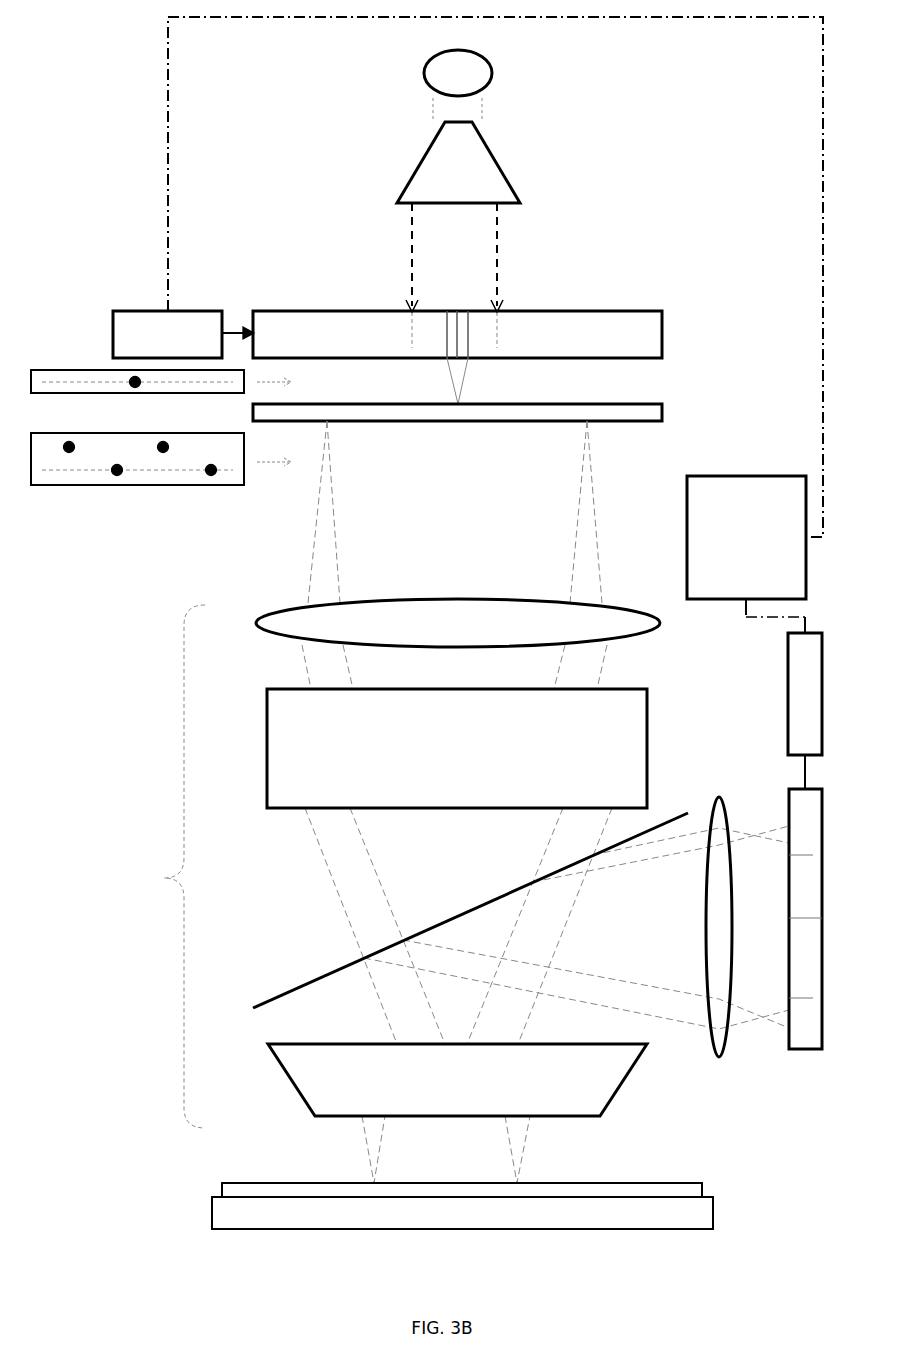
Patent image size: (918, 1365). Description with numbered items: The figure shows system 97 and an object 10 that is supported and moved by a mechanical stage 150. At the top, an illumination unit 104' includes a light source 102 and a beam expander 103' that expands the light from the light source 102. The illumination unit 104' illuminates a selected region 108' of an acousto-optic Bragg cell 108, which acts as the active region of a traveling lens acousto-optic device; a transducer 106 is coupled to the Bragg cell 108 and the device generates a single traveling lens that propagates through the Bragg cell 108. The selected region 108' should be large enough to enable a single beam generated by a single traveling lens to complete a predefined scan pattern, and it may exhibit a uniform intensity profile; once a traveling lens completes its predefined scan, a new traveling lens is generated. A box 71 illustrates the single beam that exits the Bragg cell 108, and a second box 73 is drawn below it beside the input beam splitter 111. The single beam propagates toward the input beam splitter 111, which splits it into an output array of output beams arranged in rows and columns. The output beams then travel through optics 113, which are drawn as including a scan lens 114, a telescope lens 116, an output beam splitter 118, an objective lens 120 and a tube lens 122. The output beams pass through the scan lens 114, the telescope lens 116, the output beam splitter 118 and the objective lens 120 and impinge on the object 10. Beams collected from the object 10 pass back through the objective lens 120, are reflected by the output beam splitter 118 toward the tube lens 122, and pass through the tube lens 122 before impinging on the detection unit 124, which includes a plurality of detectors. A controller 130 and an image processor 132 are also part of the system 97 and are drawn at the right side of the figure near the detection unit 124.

The object 10 is at (665, 1183).
The box illustrating a single beam 71 is at (102, 368).
The modulated laser pulse train 73 is at (130, 432).
The system 97 is at (203, 1287).
The light source 102 is at (458, 73).
The beam expander 103' is at (458, 162).
The illumination unit 104' is at (328, 173).
The transducer 106 is at (167, 334).
The acousto-optic Bragg cell 108 is at (477, 317).
The selected region 108' is at (453, 334).
The input beam splitter 111 is at (662, 421).
The optics 113 is at (164, 878).
The scan lens 114 is at (458, 623).
The telescope lens 116 is at (457, 748).
The output beam splitter 118 is at (305, 978).
The objective lens 120 is at (457, 1080).
The tube lens 122 is at (720, 795).
The detection unit 124 is at (800, 1049).
The controller 130 is at (746, 537).
The image processor 132 is at (788, 695).
The mechanical stage 150 is at (462, 1213).